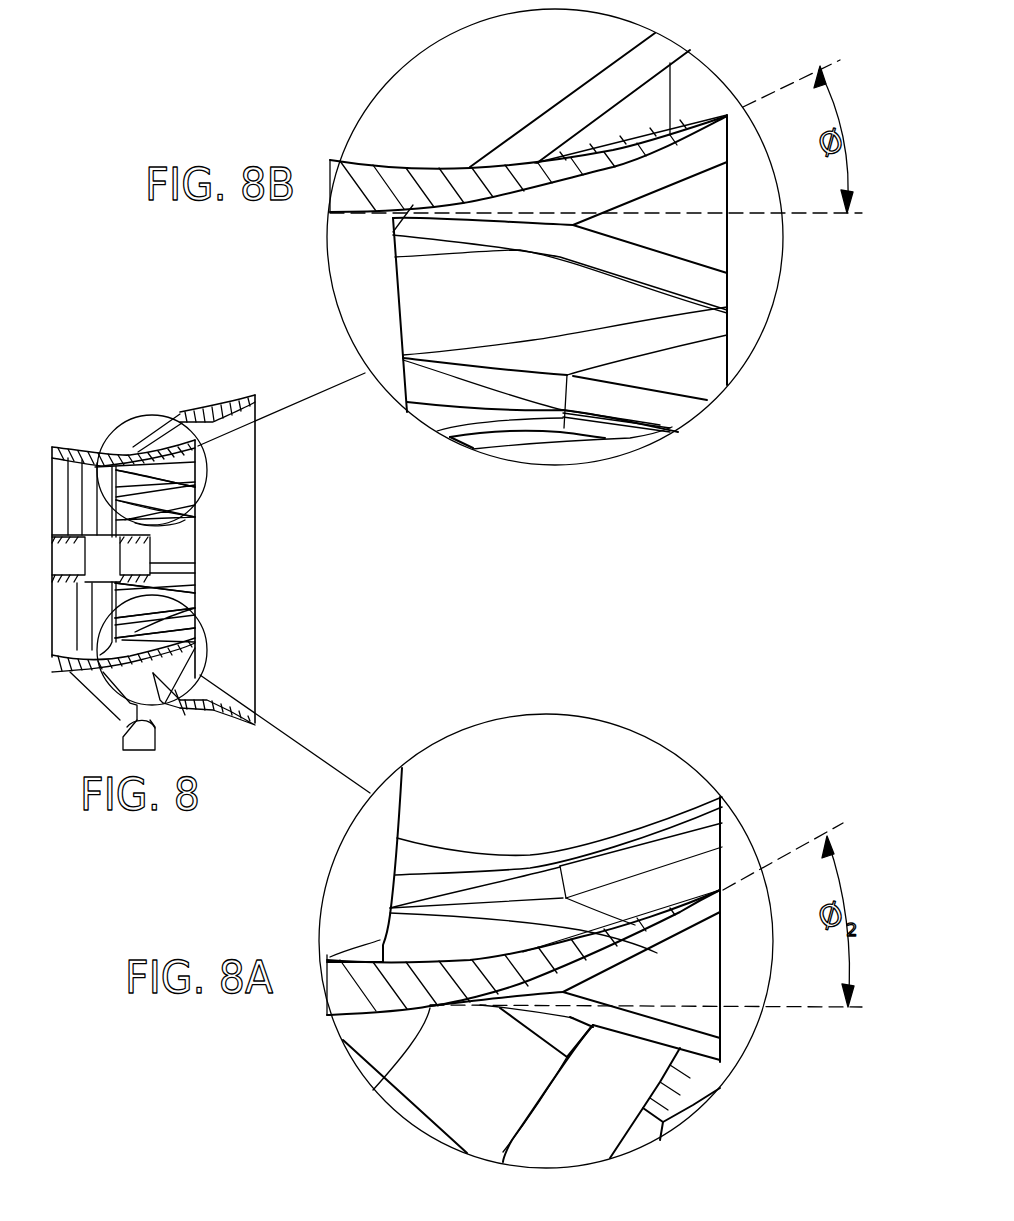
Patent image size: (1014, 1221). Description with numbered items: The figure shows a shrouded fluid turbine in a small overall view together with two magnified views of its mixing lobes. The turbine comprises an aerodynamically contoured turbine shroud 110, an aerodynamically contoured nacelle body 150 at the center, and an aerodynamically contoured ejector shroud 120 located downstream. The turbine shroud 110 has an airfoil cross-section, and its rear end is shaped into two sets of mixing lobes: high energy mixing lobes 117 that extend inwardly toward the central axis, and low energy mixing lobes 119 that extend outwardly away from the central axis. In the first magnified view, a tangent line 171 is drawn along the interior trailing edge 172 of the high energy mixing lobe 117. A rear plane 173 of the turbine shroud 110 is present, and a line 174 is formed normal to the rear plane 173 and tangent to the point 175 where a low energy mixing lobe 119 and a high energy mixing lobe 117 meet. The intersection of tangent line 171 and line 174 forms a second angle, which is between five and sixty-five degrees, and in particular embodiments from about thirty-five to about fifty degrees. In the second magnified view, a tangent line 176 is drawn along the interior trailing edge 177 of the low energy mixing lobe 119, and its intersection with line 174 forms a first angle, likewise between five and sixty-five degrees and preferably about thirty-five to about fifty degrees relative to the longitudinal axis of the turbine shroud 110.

In FIG. 8, the turbine shroud 110 is at (80, 447).
In FIG. 8A, the high energy mixing lobe 117 is at (392, 920).
In FIG. 8B, the low energy mixing lobe 119 is at (632, 142).
In FIG. 8A, the low energy mixing lobe 119 is at (672, 1032).
In FIG. 8, the ejector shroud 120 is at (208, 410).
In FIG. 8, the nacelle body 150 is at (53, 597).
In FIG. 8A, the tangent line 171 is at (785, 848).
In FIG. 8A, the interior trailing edge 172 is at (692, 900).
In FIG. 8B, the rear plane 173 is at (728, 355).
In FIG. 8A, the rear plane 173 is at (724, 800).
In FIG. 8B, the line 174 is at (815, 215).
In FIG. 8A, the line 174 is at (802, 1010).
In FIG. 8B, the point 175 is at (392, 222).
In FIG. 8A, the point 175 is at (375, 1088).
In FIG. 8B, the tangent line 176 is at (806, 78).
In FIG. 8B, the interior trailing edge 177 is at (728, 212).